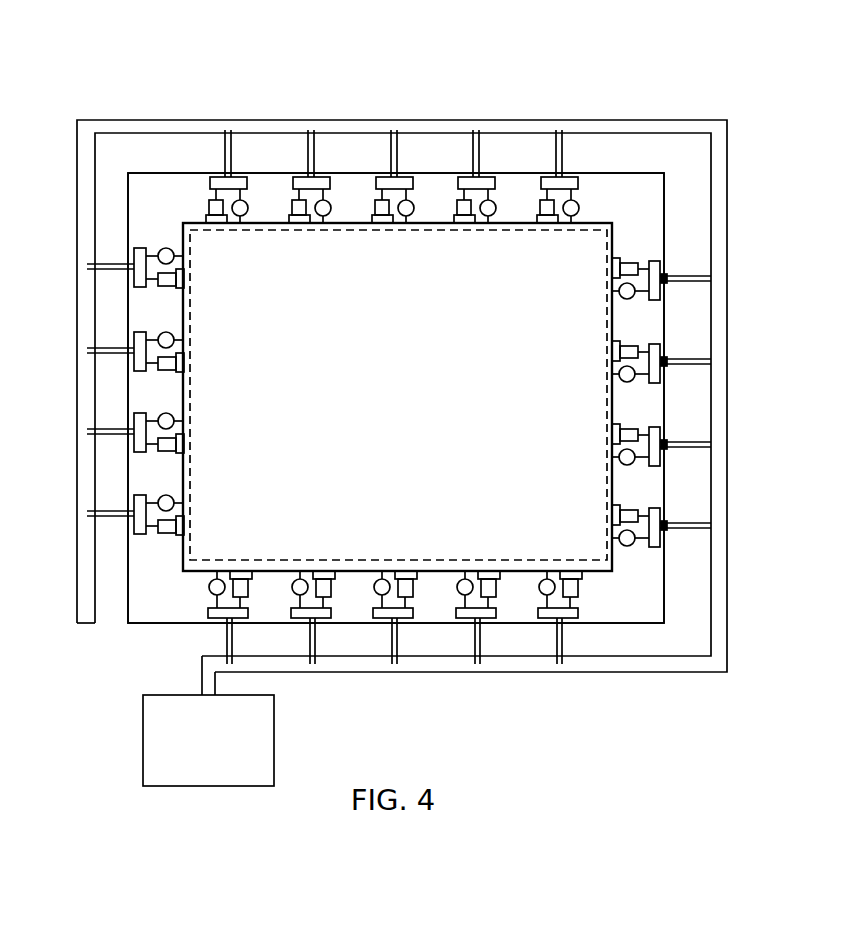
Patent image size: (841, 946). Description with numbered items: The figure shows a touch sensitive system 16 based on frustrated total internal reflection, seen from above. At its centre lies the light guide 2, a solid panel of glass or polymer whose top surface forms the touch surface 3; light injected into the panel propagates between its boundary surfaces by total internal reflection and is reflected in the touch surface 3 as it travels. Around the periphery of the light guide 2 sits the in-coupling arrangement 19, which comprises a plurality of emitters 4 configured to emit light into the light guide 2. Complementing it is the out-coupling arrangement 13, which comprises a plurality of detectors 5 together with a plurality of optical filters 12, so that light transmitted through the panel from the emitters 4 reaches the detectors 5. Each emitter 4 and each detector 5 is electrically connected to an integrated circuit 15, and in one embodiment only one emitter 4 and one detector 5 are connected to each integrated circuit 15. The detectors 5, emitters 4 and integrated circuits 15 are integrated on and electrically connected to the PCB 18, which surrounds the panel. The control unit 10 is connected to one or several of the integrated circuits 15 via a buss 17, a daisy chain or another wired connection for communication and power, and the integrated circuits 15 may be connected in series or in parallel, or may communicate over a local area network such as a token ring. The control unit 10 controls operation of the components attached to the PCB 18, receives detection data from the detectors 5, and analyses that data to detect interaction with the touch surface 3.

The light guide 2 is at (608, 195).
The touch surface 3 is at (397, 397).
The emitter 4 is at (241, 218).
The detector 5 is at (215, 223).
The control unit 10 is at (208, 740).
The optical filter 12 is at (207, 217).
The out-coupling arrangement 13 is at (207, 197).
The integrated circuit 15 is at (220, 180).
The touch sensitive system 16 is at (102, 92).
The buss 17 is at (207, 675).
The PCB 18 is at (148, 224).
The in-coupling arrangement 19 is at (250, 208).